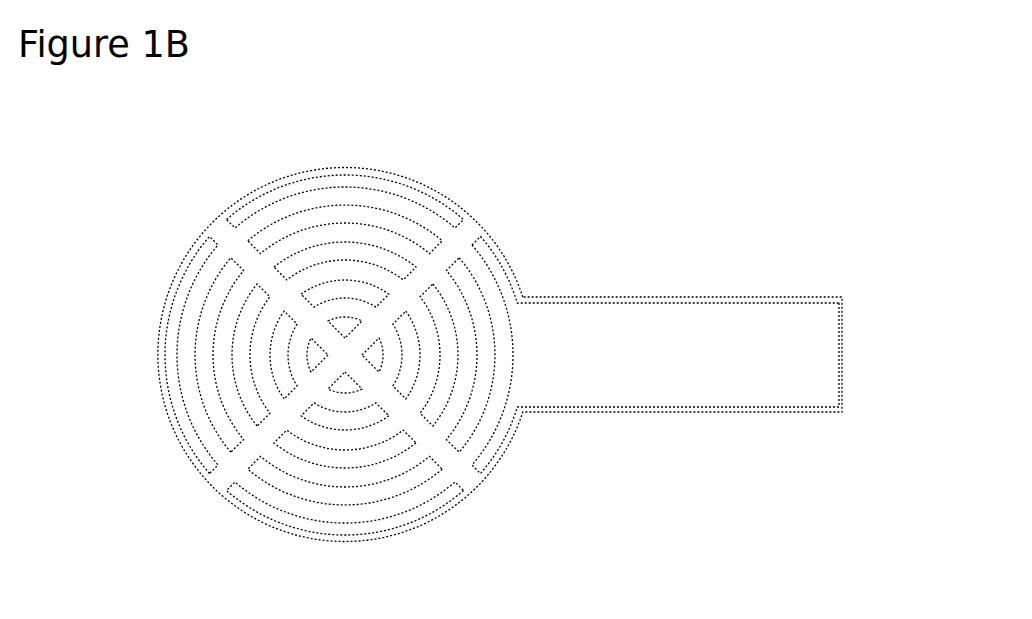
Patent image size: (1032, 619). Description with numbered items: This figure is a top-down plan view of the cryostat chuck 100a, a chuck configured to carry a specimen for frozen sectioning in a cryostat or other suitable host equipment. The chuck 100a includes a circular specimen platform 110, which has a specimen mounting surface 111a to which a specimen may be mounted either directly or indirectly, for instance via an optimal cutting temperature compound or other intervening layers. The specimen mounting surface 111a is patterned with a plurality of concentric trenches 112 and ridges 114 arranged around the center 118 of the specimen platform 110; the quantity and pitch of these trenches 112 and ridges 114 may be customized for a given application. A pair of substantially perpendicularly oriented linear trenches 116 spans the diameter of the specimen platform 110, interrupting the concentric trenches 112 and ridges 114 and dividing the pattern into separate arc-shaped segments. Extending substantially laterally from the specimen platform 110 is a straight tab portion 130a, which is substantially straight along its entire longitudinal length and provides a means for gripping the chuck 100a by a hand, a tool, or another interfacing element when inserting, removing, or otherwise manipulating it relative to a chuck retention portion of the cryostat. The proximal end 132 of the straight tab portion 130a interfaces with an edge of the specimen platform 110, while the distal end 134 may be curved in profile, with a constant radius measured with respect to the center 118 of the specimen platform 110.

The cryostat chuck 100a is at (812, 101).
The specimen platform 110 is at (495, 467).
The specimen mounting surface 111a is at (222, 322).
The concentric trenches 112 is at (277, 497).
The ridges 114 is at (329, 290).
The linear trenches 116 is at (218, 228).
The center of specimen platform 118 is at (345, 355).
The straight tab portion 130a is at (748, 330).
The proximal end 132 is at (520, 298).
The distal end 134 is at (842, 362).